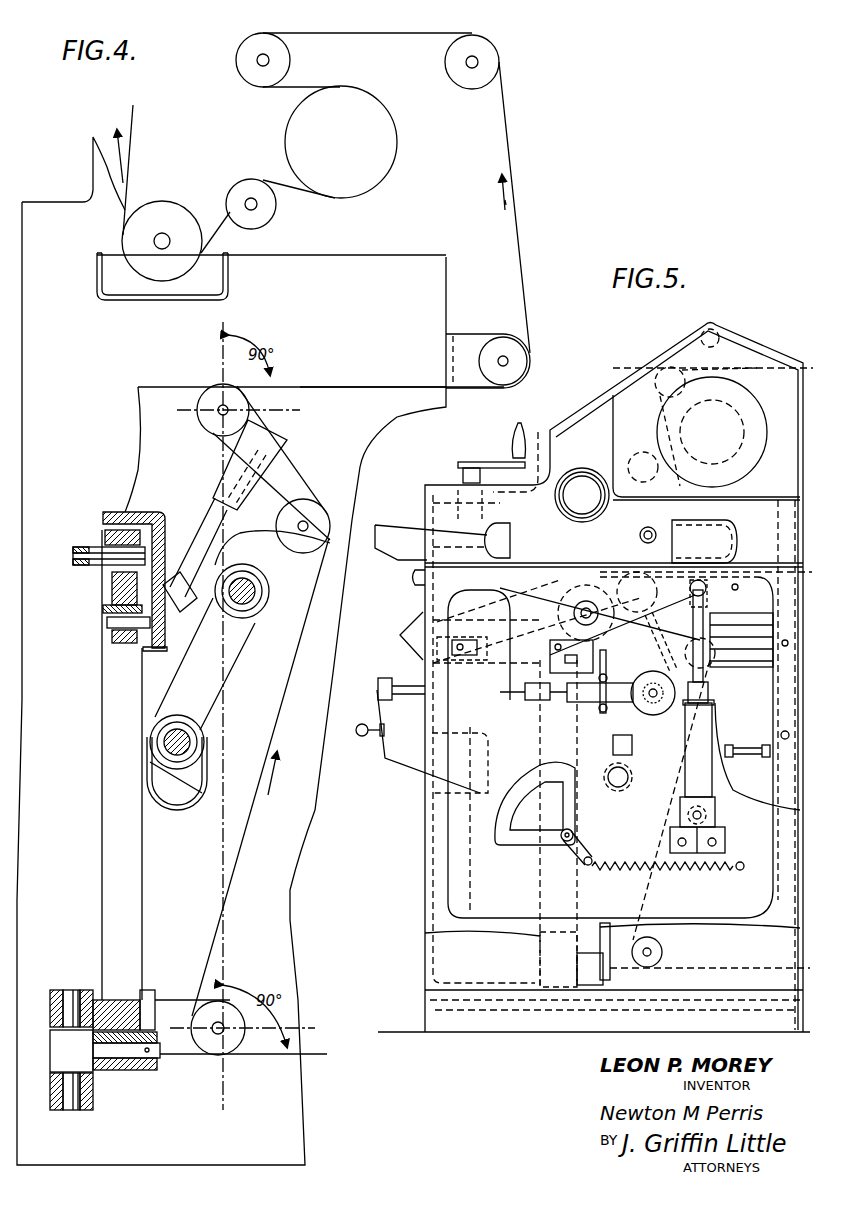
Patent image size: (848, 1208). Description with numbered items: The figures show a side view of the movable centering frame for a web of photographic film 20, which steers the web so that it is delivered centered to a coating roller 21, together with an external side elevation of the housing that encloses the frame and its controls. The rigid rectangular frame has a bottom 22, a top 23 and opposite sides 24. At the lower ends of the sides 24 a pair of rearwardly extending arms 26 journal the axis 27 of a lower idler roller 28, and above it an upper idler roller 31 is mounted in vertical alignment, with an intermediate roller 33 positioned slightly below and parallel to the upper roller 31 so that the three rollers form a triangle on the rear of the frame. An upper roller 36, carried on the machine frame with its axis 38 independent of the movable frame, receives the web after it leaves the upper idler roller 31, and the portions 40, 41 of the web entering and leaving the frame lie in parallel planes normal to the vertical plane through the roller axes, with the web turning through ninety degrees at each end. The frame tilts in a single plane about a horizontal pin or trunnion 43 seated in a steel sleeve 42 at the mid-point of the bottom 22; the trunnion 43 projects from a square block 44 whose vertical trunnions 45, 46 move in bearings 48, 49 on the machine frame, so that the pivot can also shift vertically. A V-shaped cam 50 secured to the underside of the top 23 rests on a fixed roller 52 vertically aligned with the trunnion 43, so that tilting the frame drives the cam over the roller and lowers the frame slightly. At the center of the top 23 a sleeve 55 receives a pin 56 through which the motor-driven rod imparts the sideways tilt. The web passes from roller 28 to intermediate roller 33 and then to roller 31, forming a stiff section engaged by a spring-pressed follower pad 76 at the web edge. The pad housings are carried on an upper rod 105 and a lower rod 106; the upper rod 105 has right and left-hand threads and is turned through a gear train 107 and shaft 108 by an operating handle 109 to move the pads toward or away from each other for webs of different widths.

In FIG. 4, the photographic film web 20 is at (517, 227).
In FIG. 4, the coating roller 21 is at (170, 213).
In FIG. 4, the bottom 22 is at (128, 1000).
In FIG. 4, the top 23 is at (112, 512).
In FIG. 4, the sides 24 is at (102, 849).
In FIG. 4, the rearwardly extending arms 26 is at (182, 1050).
In FIG. 4, the axis 27 is at (219, 1034).
In FIG. 4, the lower idler roller 28 is at (235, 1040).
In FIG. 5, the lower idler roller 28 is at (664, 951).
In FIG. 4, the upper idler roller 31 is at (238, 410).
In FIG. 5, the upper idler roller 31 is at (632, 590).
In FIG. 4, the intermediate roller 33 is at (312, 512).
In FIG. 5, the intermediate roller 33 is at (712, 642).
In FIG. 4, the upper roller 36 is at (500, 343).
In FIG. 4, the axis 38 is at (513, 358).
In FIG. 4, the portion of the web 40 is at (314, 1056).
In FIG. 4, the portion of the web 41 is at (371, 387).
In FIG. 4, the steel sleeve 42 is at (108, 1072).
In FIG. 4, the pin or trunnion 43 is at (120, 1052).
In FIG. 4, the square block 44 is at (52, 1043).
In FIG. 4, the trunnion 45 is at (70, 990).
In FIG. 4, the trunnion 46 is at (70, 1112).
In FIG. 4, the bearing 48 is at (82, 990).
In FIG. 4, the bearing 49 is at (82, 1112).
In FIG. 4, the V-shaped cam 50 is at (112, 588).
In FIG. 4, the fixed roller 52 is at (118, 643).
In FIG. 4, the sleeve 55 is at (105, 532).
In FIG. 4, the pin 56 is at (73, 555).
In FIG. 4, the spring-pressed follower blade or pad 76 is at (277, 438).
In FIG. 5, the spring-pressed follower blade or pad 76 is at (660, 634).
In FIG. 4, the upper rod 105 is at (250, 595).
In FIG. 4, the lower rod 106 is at (190, 740).
In FIG. 5, the lower rod 106 is at (628, 783).
In FIG. 5, the gear train 107 is at (648, 720).
In FIG. 5, the shaft 108 is at (565, 705).
In FIG. 5, the operating handle 109 is at (378, 728).